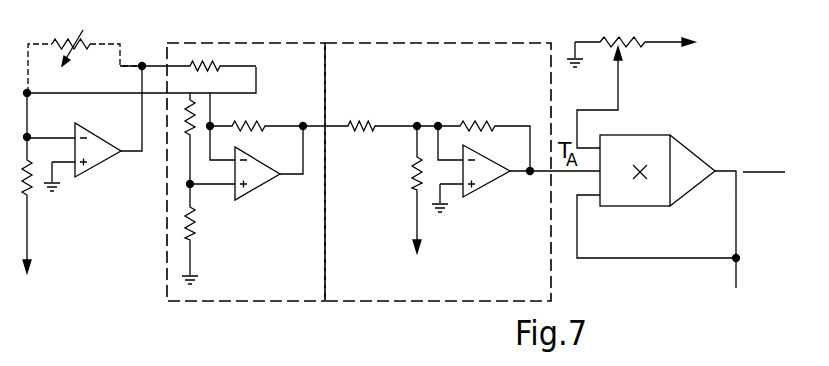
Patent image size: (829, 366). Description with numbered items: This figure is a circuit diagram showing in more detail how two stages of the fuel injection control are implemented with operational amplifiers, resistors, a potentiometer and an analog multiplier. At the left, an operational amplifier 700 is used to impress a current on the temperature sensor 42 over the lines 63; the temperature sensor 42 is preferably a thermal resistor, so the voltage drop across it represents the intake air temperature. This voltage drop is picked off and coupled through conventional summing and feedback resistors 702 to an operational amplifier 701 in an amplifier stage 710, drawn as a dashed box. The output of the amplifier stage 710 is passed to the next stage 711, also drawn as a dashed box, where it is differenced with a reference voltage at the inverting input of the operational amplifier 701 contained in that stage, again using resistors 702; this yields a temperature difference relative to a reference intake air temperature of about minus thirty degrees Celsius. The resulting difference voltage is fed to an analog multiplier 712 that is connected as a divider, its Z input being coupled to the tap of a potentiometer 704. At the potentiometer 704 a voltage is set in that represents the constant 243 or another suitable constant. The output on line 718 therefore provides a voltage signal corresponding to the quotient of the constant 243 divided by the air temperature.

The temperature sensor 42 is at (88, 41).
The lines 63 is at (120, 66).
The operational amplifier 700 is at (93, 158).
The operational amplifier 701 is at (484, 181).
The summing and feedback resistors 702 is at (29, 190).
The potentiometer 704 is at (637, 45).
The amplifier stage 710 is at (240, 292).
The stage 711 is at (411, 293).
The analog multiplier 712 is at (632, 206).
The output line 718 is at (736, 230).
The constant 243 is at (764, 174).